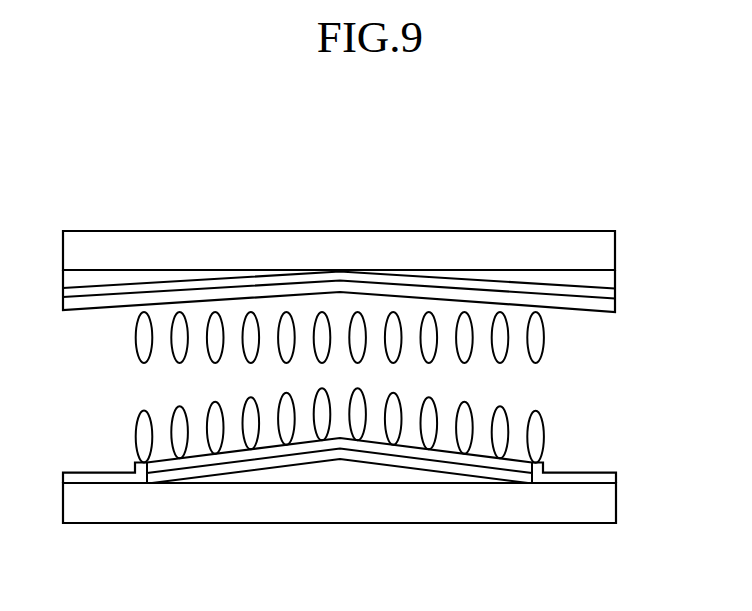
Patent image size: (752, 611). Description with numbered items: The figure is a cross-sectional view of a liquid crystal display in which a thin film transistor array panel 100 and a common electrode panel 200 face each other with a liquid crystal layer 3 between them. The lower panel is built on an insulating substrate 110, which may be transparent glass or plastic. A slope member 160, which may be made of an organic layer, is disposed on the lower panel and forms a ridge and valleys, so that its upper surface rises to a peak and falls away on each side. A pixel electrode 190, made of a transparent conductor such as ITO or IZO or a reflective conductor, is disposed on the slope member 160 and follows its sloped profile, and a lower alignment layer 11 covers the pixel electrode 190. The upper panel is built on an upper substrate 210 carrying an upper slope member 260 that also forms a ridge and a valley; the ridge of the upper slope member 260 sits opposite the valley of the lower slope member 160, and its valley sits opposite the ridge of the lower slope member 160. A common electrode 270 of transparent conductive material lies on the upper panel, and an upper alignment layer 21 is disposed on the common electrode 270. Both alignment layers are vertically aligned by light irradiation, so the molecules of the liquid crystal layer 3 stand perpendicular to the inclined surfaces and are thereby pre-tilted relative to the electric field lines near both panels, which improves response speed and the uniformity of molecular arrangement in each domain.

The common electrode panel 200 is at (369, 277).
The upper substrate 210 is at (344, 248).
The upper slope member 260 is at (85, 278).
The common electrode 270 is at (166, 288).
The upper alignment layer 21 is at (588, 313).
The liquid crystal layer 3 is at (622, 315).
The thin film transistor array panel 100 is at (366, 509).
The insulating substrate 110 is at (425, 502).
The lower alignment layer 11 is at (578, 479).
The pixel electrode 190 is at (278, 463).
The slope member 160 is at (340, 472).